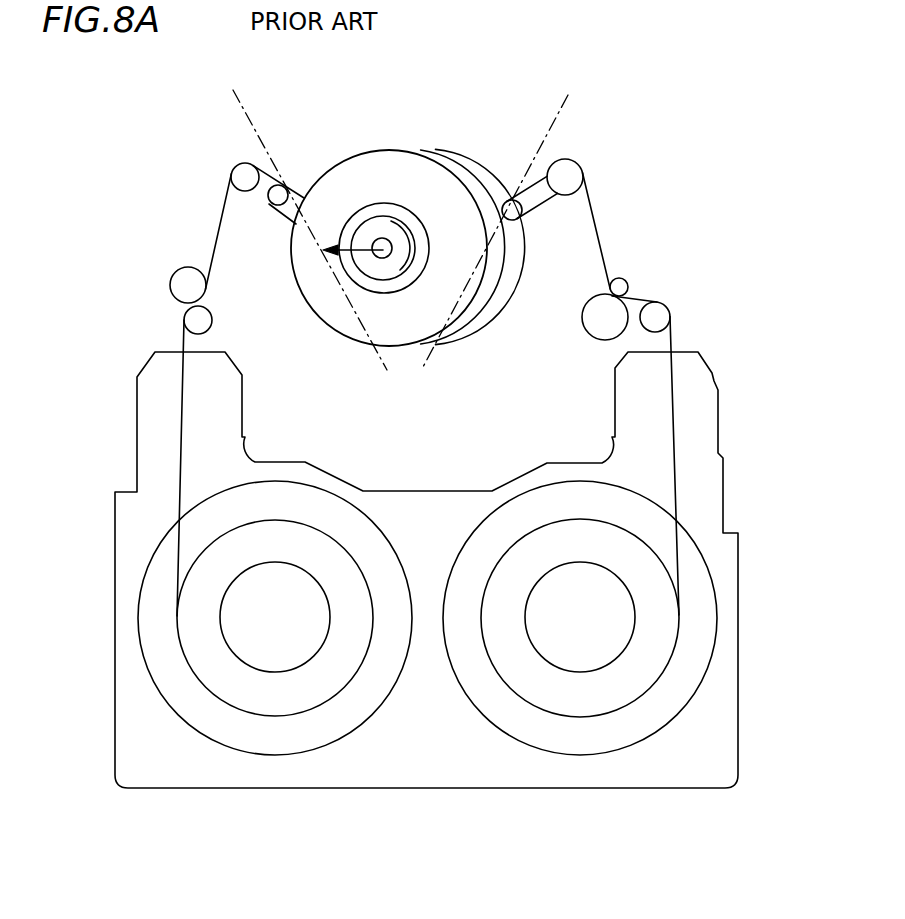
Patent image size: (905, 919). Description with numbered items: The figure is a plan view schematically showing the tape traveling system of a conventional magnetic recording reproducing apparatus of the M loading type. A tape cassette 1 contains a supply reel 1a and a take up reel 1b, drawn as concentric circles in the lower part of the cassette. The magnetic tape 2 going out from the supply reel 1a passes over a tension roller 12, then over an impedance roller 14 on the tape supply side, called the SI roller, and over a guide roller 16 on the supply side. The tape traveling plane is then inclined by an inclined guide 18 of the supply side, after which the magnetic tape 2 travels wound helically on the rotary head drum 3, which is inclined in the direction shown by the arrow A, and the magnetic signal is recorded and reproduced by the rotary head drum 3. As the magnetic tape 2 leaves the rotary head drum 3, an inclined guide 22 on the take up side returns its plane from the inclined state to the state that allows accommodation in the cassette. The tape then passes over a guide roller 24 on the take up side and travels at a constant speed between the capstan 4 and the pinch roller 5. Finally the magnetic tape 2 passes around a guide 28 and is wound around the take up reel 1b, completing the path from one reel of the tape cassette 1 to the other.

The tape cassette 1 is at (380, 762).
The supply reel 1a is at (157, 627).
The take up reel 1b is at (697, 628).
The magnetic tape 2 is at (182, 341).
The rotary head drum 3 is at (397, 172).
The capstan 4 is at (620, 287).
The pinch roller 5 is at (612, 312).
The tension roller 12 is at (192, 317).
The impedance roller (SI roller) 14 is at (182, 283).
The guide roller 16 is at (243, 176).
The inclined guide 18 is at (284, 186).
The inclined guide 22 is at (526, 198).
The guide roller 24 is at (572, 174).
The guide 28 is at (661, 315).